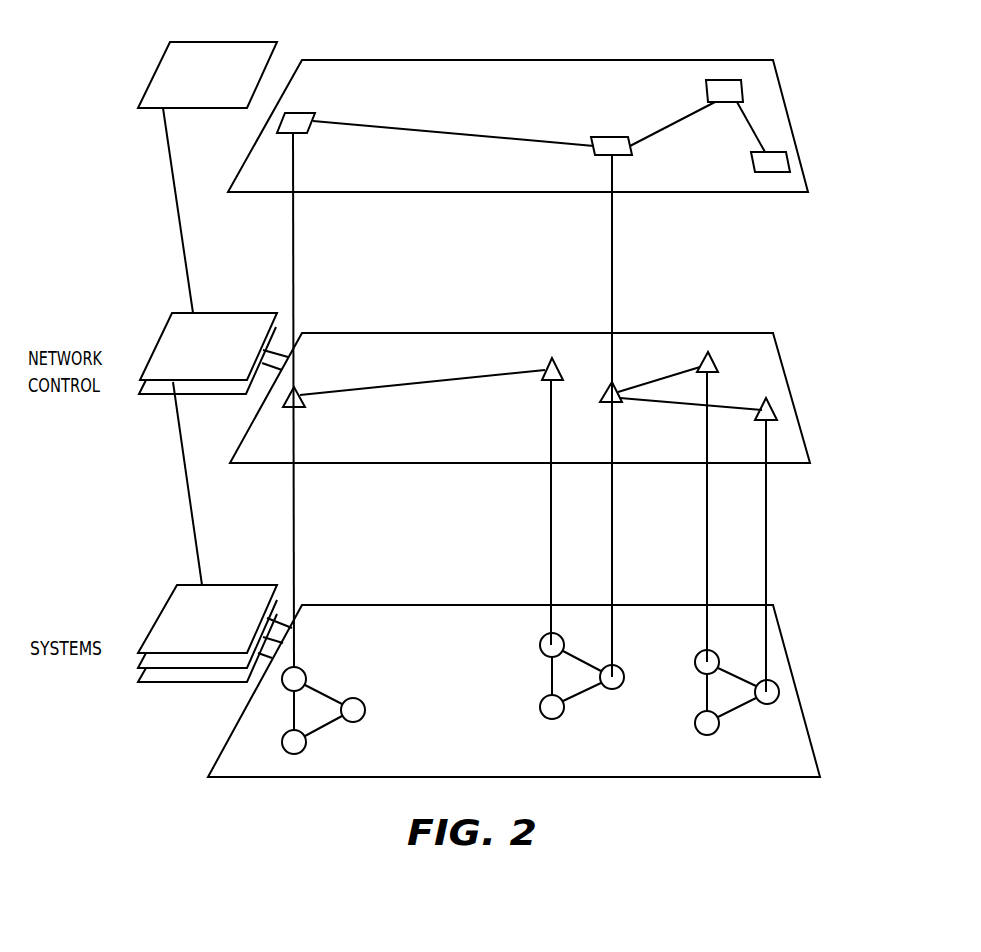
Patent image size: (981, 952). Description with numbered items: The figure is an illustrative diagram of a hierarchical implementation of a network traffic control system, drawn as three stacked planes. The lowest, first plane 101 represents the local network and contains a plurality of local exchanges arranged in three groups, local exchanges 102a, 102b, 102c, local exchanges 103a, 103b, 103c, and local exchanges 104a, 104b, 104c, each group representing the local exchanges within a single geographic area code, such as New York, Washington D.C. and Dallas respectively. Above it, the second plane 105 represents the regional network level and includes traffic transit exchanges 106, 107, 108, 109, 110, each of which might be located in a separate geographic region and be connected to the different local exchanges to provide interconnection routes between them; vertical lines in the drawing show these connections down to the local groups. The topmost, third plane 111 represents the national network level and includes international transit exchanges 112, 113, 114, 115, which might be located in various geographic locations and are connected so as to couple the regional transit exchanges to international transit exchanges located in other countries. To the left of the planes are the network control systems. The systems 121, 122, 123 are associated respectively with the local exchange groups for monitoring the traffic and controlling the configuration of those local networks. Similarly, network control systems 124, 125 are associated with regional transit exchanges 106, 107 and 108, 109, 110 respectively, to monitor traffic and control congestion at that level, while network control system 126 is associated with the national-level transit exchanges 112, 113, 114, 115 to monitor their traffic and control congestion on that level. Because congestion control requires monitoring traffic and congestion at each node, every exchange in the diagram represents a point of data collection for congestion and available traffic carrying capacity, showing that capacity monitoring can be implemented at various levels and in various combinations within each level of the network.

The first plane 101 is at (800, 748).
The local exchange 102a is at (306, 748).
The local exchange 102b is at (306, 678).
The local exchange 102c is at (358, 721).
The local exchange 103a is at (540, 714).
The local exchange 103b is at (540, 643).
The local exchange 103c is at (613, 688).
The local exchange 104a is at (695, 730).
The local exchange 104b is at (695, 661).
The local exchange 104c is at (768, 704).
The second plane 105 is at (768, 373).
The traffic transit exchange 106 is at (292, 408).
The traffic transit exchange 107 is at (548, 382).
The traffic transit exchange 108 is at (608, 402).
The traffic transit exchange 109 is at (698, 361).
The traffic transit exchange 110 is at (761, 420).
The third plane 111 is at (772, 120).
The international transit exchange 112 is at (299, 112).
The international transit exchange 113 is at (598, 137).
The international transit exchange 114 is at (706, 88).
The international transit exchange 115 is at (752, 160).
The network control system 121 is at (193, 685).
The network control system 122 is at (158, 670).
The network control system 123 is at (177, 583).
The network control system 124 is at (158, 396).
The network control system 125 is at (173, 312).
The network control system 126 is at (223, 40).